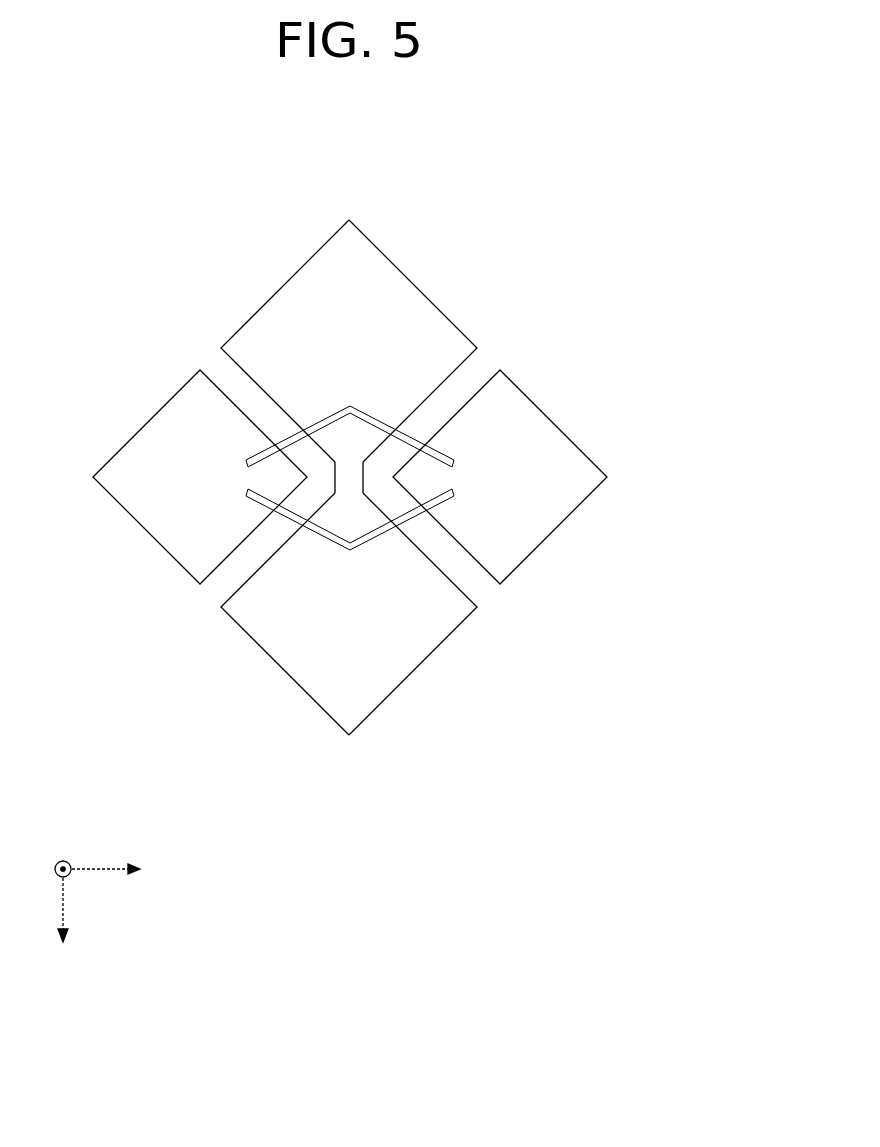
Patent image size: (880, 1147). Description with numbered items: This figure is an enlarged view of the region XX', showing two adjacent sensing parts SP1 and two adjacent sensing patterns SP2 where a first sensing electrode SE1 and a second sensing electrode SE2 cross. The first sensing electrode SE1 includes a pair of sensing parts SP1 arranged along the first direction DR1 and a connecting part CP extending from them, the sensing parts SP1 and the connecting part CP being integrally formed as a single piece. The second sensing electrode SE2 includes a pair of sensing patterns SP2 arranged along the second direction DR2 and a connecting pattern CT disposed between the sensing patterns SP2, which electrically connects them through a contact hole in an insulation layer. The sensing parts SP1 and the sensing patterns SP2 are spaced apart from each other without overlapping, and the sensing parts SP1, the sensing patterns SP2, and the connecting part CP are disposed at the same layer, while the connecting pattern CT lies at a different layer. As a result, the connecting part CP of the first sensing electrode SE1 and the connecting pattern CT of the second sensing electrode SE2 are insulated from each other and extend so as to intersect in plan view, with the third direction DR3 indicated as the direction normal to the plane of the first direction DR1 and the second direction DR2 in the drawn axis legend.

The sensing part SP1 is at (417, 318).
The sensing pattern SP2 is at (148, 506).
The connecting part CP is at (344, 477).
The connecting pattern CT is at (327, 538).
The first sensing electrode SE1 is at (718, 832).
The second sensing electrode SE2 is at (718, 905).
The region XX' is at (562, 211).
The first direction DR1 is at (63, 925).
The second direction DR2 is at (127, 869).
The third direction DR3 is at (63, 853).